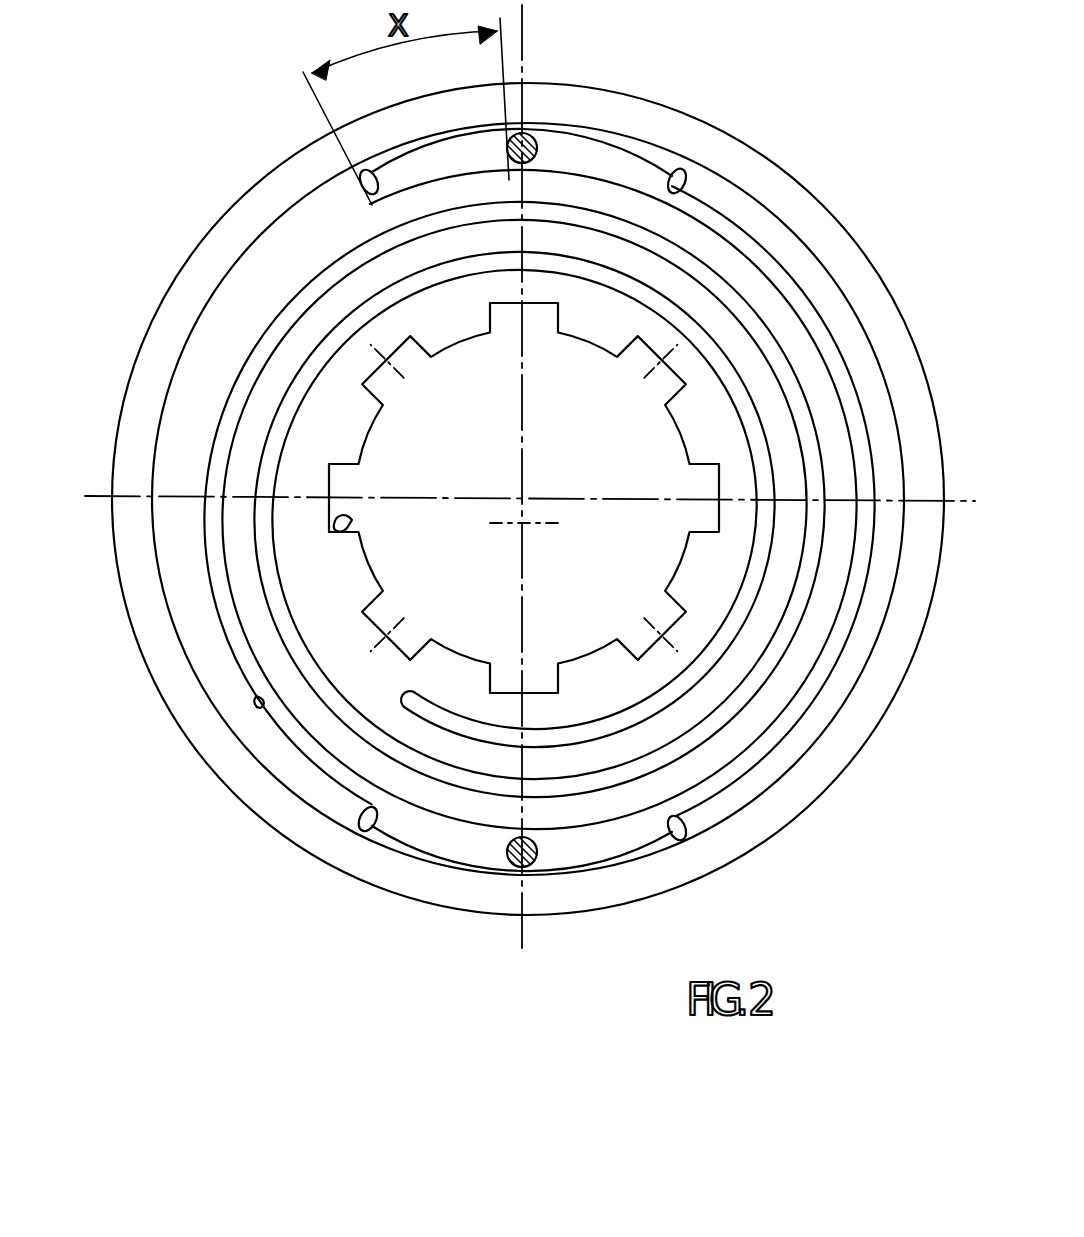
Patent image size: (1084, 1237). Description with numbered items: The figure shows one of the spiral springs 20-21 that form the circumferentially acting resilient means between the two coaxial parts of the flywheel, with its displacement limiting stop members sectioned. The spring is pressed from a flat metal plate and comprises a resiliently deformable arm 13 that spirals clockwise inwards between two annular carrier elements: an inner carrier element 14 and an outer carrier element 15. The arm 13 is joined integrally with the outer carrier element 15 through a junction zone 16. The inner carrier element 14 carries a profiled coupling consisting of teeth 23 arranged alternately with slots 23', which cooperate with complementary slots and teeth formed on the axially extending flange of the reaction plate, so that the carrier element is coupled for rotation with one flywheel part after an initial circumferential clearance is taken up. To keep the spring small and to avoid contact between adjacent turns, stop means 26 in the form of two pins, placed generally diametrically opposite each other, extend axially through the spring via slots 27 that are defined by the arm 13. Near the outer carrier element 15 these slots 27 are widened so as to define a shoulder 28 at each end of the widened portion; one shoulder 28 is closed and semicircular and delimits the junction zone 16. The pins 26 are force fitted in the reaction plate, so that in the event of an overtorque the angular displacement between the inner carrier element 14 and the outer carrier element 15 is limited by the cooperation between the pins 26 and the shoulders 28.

The resiliently deformable arm 13 is at (747, 637).
The inner carrier element 14 is at (341, 428).
The outer carrier element 15 is at (427, 878).
The junction zone 16 is at (390, 210).
The spiral springs 20-21 is at (492, 918).
The teeth 23 is at (455, 644).
The slots 23' is at (323, 554).
The stop means 26 is at (540, 152).
The slots 27 is at (262, 697).
The shoulder 28 is at (358, 193).